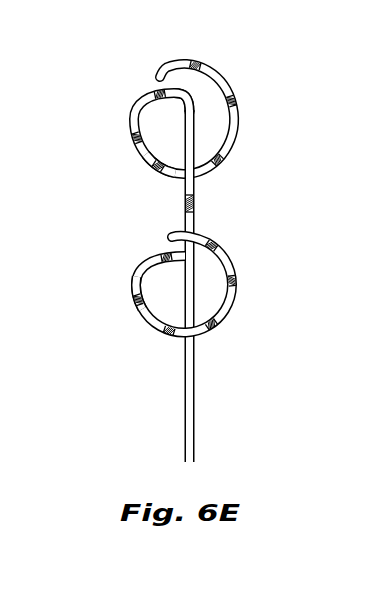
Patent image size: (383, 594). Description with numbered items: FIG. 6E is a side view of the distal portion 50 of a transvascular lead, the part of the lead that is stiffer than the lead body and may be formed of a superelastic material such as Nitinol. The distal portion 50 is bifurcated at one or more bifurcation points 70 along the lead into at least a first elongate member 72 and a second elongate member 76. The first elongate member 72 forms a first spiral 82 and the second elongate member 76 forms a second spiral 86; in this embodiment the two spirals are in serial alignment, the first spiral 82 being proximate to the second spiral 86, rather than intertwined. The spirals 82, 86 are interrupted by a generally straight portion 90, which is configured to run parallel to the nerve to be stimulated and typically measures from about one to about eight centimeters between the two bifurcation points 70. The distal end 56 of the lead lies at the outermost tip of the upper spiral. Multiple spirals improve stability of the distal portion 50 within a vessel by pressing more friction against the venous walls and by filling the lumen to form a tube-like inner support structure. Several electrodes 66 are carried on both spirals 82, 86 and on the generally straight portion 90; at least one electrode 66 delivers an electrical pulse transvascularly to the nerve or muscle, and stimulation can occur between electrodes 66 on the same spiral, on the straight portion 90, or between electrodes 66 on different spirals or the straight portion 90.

The distal portion 50 is at (188, 437).
The distal end 56 is at (191, 91).
The electrode 66 is at (238, 98).
The bifurcation point 70 is at (175, 107).
The first elongate member 72 is at (132, 287).
The second elongate member 76 is at (169, 177).
The first spiral 82 is at (126, 324).
The second spiral 86 is at (125, 153).
The generally straight portion 90 is at (196, 202).